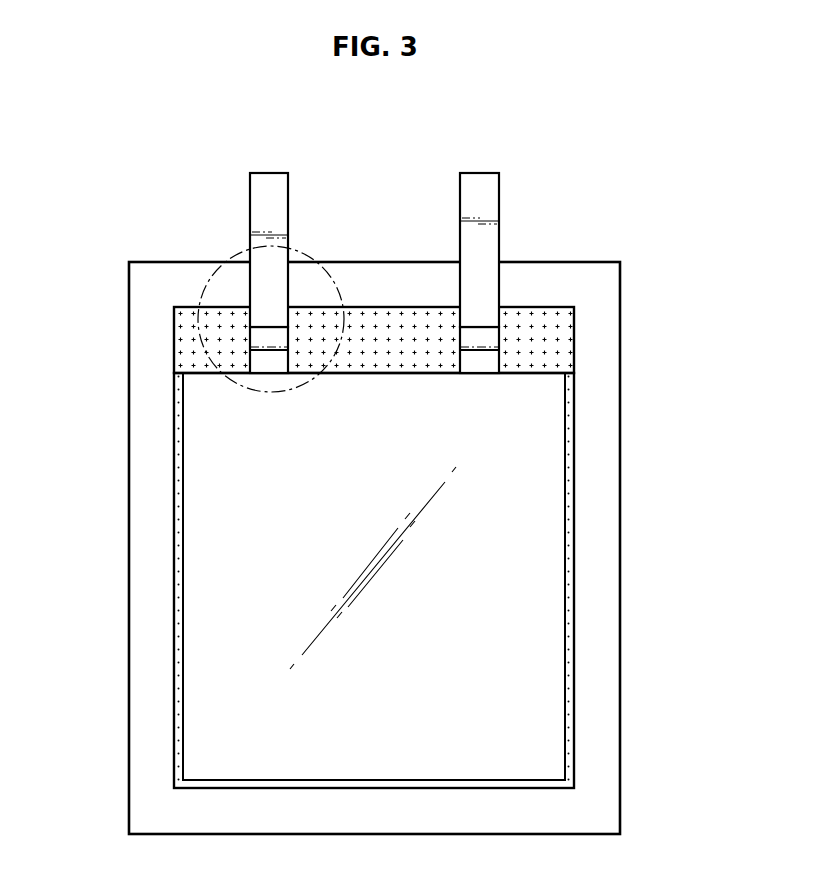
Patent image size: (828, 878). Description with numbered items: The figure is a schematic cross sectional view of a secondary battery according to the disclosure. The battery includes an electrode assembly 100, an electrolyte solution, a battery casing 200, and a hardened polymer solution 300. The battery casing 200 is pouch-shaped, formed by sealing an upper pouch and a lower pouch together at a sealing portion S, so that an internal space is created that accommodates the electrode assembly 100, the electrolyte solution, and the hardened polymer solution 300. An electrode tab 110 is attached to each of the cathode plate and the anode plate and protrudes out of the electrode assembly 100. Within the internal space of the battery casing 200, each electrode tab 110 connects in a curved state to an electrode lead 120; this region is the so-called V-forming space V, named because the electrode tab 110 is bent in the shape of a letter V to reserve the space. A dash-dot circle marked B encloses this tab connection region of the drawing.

The electrode assembly 100 is at (553, 468).
The electrode tab 110 is at (258, 364).
The electrode lead 120 is at (465, 179).
The battery casing 200 is at (580, 262).
The hardened polymer solution 300 is at (558, 330).
The enlarged portion B is at (228, 250).
The V-forming space V is at (377, 330).
The sealing portion S is at (608, 418).